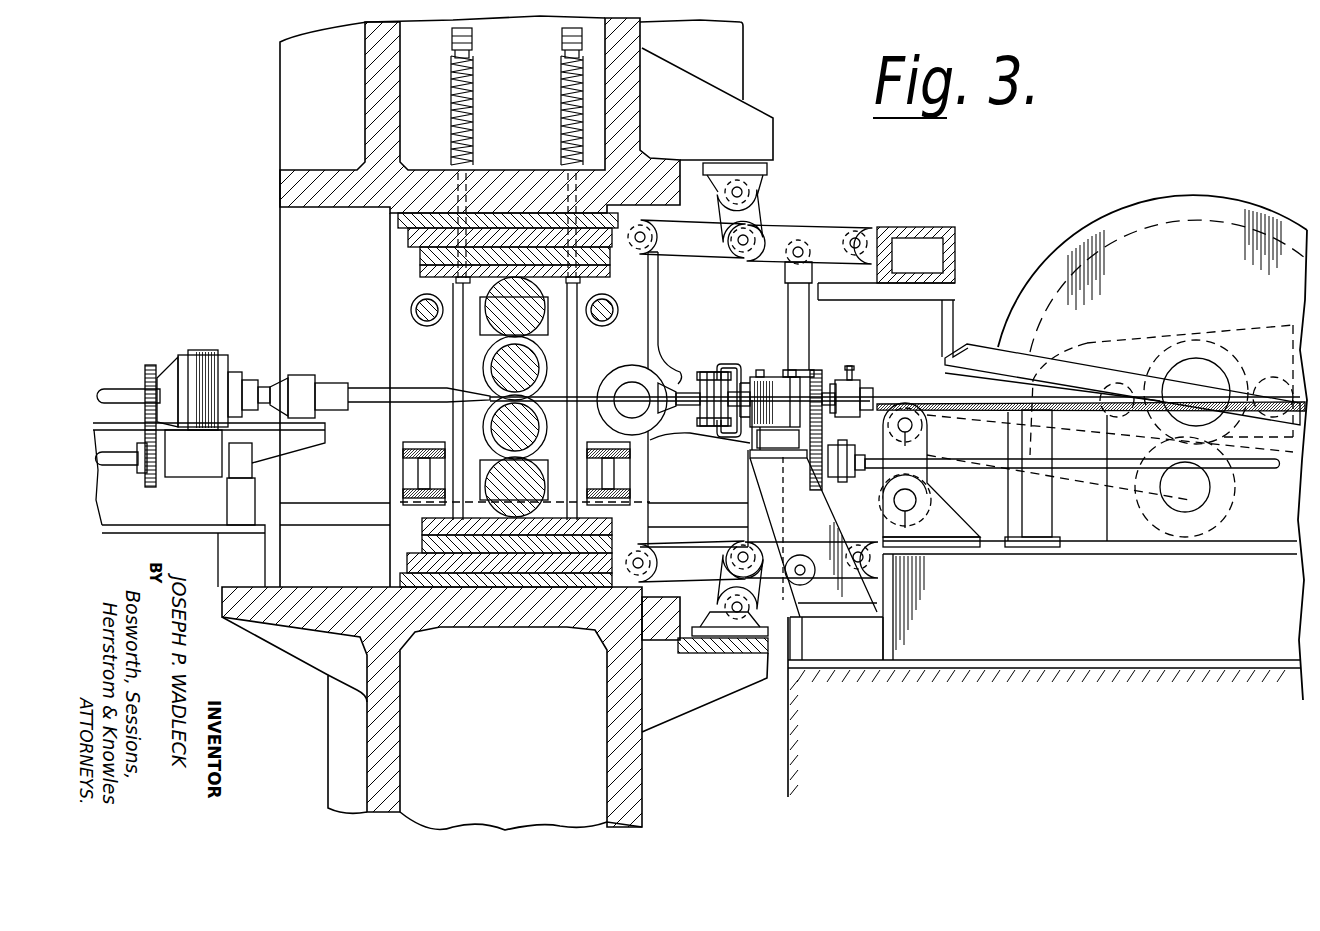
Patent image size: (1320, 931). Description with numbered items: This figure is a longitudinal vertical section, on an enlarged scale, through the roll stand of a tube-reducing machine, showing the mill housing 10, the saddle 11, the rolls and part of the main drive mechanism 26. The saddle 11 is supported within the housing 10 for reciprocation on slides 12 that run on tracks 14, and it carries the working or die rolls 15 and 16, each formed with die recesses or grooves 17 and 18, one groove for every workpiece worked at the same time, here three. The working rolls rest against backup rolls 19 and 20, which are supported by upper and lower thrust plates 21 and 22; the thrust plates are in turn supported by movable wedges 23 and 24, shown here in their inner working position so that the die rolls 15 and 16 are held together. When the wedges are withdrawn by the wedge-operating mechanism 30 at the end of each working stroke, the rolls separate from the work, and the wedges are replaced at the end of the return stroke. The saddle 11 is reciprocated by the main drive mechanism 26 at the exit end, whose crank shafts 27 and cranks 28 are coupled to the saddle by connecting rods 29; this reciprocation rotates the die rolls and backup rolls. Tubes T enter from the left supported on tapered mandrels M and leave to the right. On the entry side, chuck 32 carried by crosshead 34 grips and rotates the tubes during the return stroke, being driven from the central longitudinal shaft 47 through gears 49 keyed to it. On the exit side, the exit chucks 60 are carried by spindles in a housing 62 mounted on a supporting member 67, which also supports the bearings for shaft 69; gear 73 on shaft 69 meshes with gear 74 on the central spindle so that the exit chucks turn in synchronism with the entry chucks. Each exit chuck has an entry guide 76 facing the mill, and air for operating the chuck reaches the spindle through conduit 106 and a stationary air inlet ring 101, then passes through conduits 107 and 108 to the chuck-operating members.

The mill housing 10 is at (298, 113).
The saddle 11 is at (652, 306).
The slides 12 is at (340, 503).
The tracks 14 is at (322, 525).
The working or die roll 15 is at (527, 366).
The working or die roll 16 is at (531, 428).
The die recesses or grooves 17 is at (500, 358).
The die recesses or grooves 18 is at (498, 424).
The backup roll 19 is at (533, 299).
The backup roll 20 is at (532, 466).
The upper thrust plate 21 is at (421, 269).
The lower thrust plate 22 is at (422, 521).
The movable wedge 23 is at (578, 240).
The movable wedge 24 is at (598, 565).
The main drive mechanism 26 is at (1234, 193).
The crank shaft 27 is at (1218, 383).
The crank 28 is at (1240, 442).
The connecting rod 29 is at (1081, 490).
The wedge-operating mechanism 30 is at (783, 228).
The chuck 32 is at (240, 372).
The crosshead 34 is at (204, 355).
The longitudinal shaft 47 is at (113, 458).
The gear 49 is at (145, 481).
The exit chuck 60 is at (707, 370).
The housing 62 is at (753, 373).
The supporting member 67 is at (758, 436).
The shaft 69 is at (982, 468).
The gear 73 is at (826, 478).
The gear 74 is at (839, 362).
The entry guide 76 is at (653, 370).
The air inlet ring 101 is at (862, 385).
The conduit 106 is at (853, 378).
The conduit 107 is at (729, 363).
The conduit 108 is at (760, 436).
The mandrel M is at (97, 397).
The tube T is at (103, 392).